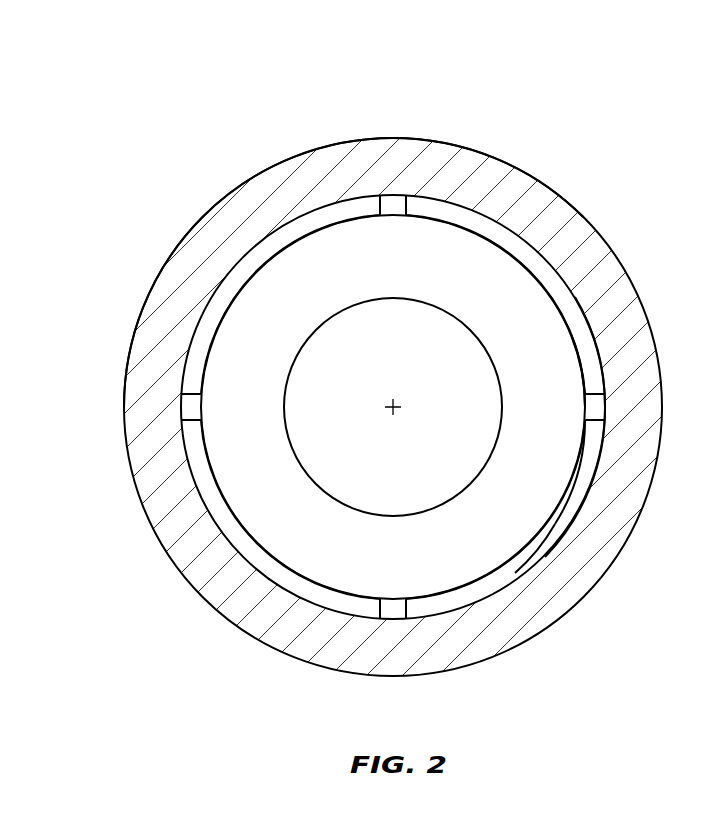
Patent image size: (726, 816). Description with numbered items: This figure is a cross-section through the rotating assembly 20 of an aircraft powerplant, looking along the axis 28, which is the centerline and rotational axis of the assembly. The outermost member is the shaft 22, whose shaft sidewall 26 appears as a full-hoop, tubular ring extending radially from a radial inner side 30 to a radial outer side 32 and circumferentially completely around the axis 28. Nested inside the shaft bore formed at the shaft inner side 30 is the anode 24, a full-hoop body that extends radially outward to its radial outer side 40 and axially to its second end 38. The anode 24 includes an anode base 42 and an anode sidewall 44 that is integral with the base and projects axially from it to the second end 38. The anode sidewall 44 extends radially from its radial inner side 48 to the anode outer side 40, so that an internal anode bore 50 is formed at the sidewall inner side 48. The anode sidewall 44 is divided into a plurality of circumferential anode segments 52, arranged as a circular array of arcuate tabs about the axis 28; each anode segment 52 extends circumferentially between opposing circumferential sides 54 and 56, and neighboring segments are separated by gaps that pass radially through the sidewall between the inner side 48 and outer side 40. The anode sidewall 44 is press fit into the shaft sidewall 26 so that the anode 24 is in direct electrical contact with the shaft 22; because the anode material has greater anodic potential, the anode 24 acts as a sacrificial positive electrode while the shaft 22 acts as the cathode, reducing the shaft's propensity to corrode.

The rotating assembly 20 is at (140, 92).
The shaft 22 is at (545, 182).
The anode 24 is at (566, 277).
The shaft sidewall 26 is at (465, 160).
The axis 28 is at (398, 402).
The radial inner side 30 is at (230, 277).
The radial outer side 32 is at (197, 223).
The second end 38 is at (565, 515).
The radial outer side 40 is at (605, 352).
The anode base 42 is at (475, 480).
The anode sidewall 44 is at (559, 548).
The radial inner side 48 is at (590, 363).
The anode bore 50 is at (549, 463).
The anode segments 52 is at (300, 245).
The circumferential side 54 is at (386, 197).
The circumferential side 56 is at (398, 208).